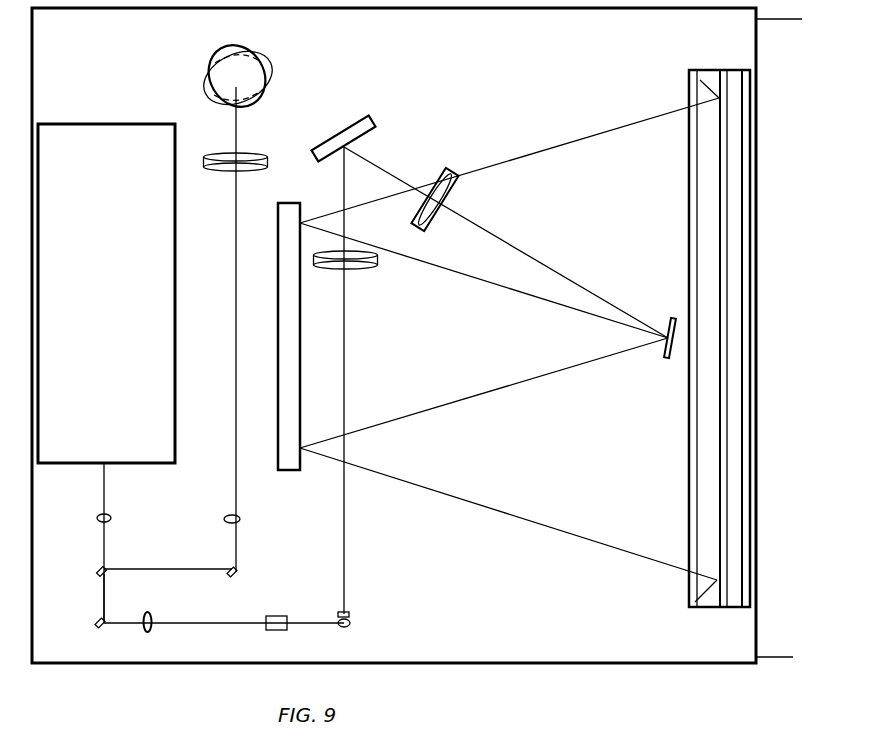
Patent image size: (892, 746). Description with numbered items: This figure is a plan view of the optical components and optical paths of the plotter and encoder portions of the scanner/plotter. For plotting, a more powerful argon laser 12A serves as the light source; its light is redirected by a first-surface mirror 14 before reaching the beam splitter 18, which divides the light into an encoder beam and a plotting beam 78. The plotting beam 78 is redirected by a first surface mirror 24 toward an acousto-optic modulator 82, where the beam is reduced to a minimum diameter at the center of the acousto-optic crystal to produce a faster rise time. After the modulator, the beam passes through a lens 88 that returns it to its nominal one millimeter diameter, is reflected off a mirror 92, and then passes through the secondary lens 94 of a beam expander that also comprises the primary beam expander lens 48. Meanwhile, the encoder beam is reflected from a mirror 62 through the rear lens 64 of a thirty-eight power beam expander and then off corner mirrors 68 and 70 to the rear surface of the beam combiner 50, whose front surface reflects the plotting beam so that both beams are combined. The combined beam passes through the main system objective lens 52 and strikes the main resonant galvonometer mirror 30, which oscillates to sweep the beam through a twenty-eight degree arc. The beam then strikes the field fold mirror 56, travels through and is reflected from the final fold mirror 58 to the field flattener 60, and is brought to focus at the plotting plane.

The laser 12A is at (126, 332).
The mirror 14 is at (97, 518).
The beam splitter 18 is at (96, 572).
The first surface mirror 24 is at (96, 630).
The main resonant galvonometer mirror 30 is at (667, 358).
The beam expander primary lens 48 is at (377, 268).
The beam combiner 50 is at (365, 115).
The main system objective lens 52 is at (448, 167).
The field fold mirror 56 is at (296, 310).
The final fold mirror 58 is at (739, 70).
The field flattener 60 is at (218, 174).
The mirror 62 is at (238, 577).
The rear lens 64 is at (240, 520).
The corner mirror 68 is at (272, 86).
The corner mirror 70 is at (258, 50).
The plotting beam 78 is at (100, 596).
The acousto-optic modulator 82 is at (272, 632).
The lens 88 is at (151, 616).
The mirror 92 is at (350, 626).
The secondary lens 94 is at (350, 616).